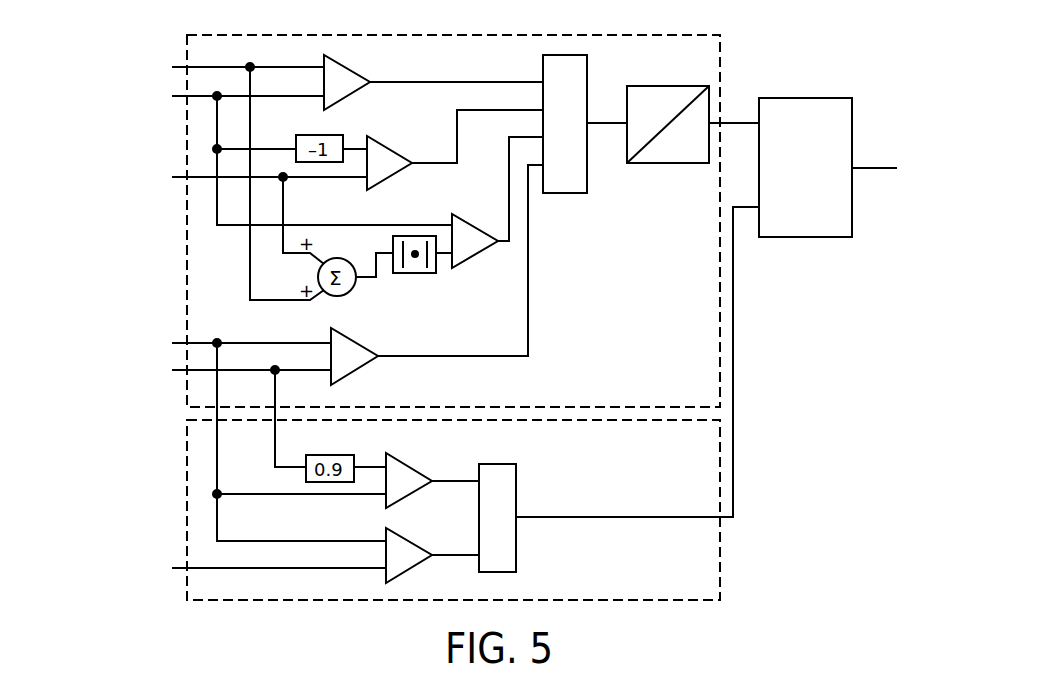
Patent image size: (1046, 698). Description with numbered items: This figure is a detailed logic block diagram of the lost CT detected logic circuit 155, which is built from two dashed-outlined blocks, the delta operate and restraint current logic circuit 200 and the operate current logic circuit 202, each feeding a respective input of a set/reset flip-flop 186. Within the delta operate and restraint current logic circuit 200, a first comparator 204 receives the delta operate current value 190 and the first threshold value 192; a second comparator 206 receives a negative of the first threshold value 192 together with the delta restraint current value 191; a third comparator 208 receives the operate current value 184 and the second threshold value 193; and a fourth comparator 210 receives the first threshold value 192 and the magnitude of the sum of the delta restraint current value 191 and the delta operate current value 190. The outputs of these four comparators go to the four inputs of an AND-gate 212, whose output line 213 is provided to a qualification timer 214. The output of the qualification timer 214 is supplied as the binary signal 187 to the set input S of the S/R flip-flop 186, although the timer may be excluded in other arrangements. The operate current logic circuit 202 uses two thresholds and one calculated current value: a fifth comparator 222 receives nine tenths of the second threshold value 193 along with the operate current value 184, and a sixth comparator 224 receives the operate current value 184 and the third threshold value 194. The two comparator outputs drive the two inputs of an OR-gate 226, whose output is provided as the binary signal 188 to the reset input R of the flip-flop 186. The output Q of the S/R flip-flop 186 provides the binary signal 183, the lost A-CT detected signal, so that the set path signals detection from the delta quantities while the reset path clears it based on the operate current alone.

The lost CT detected logic circuit 155 is at (819, 338).
The binary signal 183 is at (875, 168).
The operate current value 184 is at (183, 342).
The set/reset (S/R) flip-flop 186 is at (852, 108).
The binary signal 187 is at (740, 123).
The binary signal 188 is at (734, 462).
The delta operate current value 190 is at (183, 67).
The delta restraint current value 191 is at (183, 180).
The first threshold value 192 is at (183, 98).
The second threshold value 193 is at (183, 372).
The third threshold value 194 is at (268, 568).
The delta operate and restraint current logic circuit 200 is at (697, 35).
The operate current logic circuit 202 is at (720, 562).
The first comparator 204 is at (353, 62).
The second comparator 206 is at (395, 140).
The third comparator 208 is at (355, 372).
The fourth comparator 210 is at (474, 256).
The AND-gate 212 is at (567, 193).
The AND gate output line 213 is at (610, 123).
The qualification timer 214 is at (670, 163).
The fifth comparator 222 is at (424, 464).
The sixth comparator 224 is at (428, 526).
The OR-gate 226 is at (516, 553).